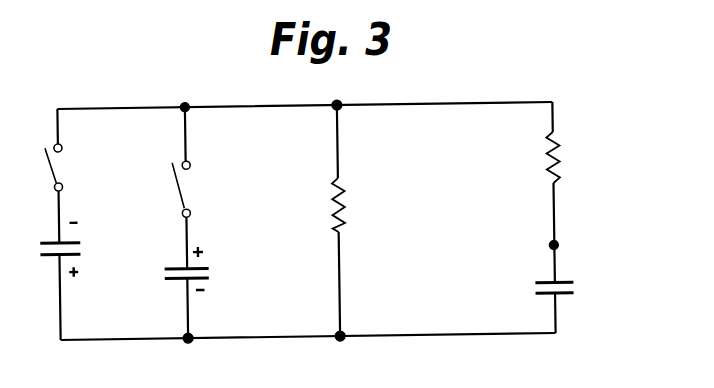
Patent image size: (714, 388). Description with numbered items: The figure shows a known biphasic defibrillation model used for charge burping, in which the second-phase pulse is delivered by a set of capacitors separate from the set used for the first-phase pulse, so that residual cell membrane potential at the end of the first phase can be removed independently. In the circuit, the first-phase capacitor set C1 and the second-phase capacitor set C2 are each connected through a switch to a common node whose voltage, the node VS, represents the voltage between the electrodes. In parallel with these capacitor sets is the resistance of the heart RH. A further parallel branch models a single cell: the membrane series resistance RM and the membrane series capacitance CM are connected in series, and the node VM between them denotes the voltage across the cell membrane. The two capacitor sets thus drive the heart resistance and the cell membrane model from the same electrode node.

The φ1 capacitor set C1 is at (41, 250).
The φ2 capacitor set C2 is at (213, 272).
The node voltage between the electrodes VS is at (196, 80).
The resistance of the heart RH is at (362, 205).
The membrane series resistance RM is at (581, 154).
The voltage across the cell membrane VM is at (582, 240).
The membrane series capacitance CM is at (580, 289).